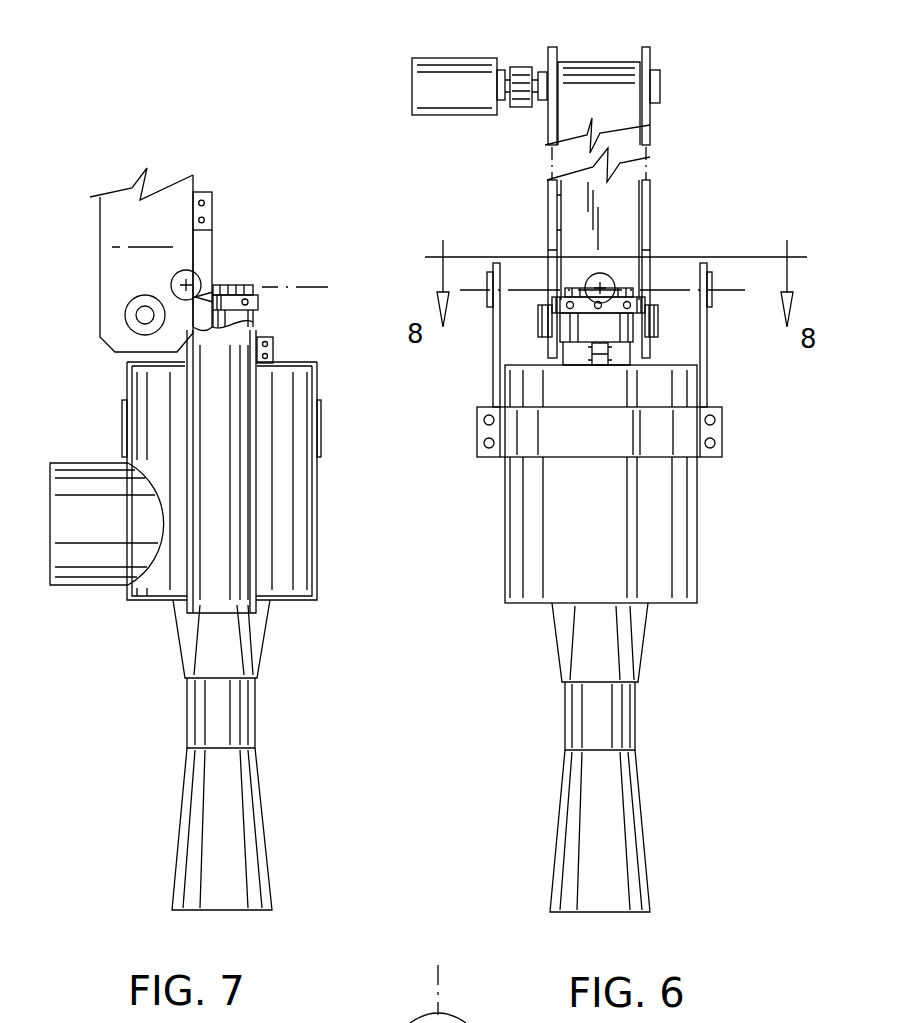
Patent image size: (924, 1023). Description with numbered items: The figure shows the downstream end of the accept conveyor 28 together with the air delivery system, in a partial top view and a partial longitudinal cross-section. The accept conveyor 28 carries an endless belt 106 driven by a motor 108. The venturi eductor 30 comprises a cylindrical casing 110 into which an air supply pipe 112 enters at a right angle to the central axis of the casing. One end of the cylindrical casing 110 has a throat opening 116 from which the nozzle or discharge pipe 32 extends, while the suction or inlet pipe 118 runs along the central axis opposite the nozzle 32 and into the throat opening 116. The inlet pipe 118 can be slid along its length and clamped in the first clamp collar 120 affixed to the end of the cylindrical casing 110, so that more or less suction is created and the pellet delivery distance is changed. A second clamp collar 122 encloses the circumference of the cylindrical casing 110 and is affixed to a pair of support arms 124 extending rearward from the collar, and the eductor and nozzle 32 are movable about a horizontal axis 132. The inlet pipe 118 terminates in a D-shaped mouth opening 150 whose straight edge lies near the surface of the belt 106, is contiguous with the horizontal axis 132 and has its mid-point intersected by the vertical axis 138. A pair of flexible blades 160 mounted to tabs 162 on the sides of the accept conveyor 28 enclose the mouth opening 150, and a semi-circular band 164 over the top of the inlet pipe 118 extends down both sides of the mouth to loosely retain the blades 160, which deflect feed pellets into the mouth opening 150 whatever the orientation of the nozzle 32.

In FIG. 7, the accept conveyor 28 is at (100, 278).
In FIG. 6, the accept conveyor 28 is at (650, 62).
In FIG. 6, the venturi eductor 30 is at (698, 568).
In FIG. 7, the nozzle or discharge pipe 32 is at (263, 828).
In FIG. 6, the nozzle or discharge pipe 32 is at (648, 812).
In FIG. 6, the endless belt 106 is at (597, 62).
In FIG. 6, the motor 108 is at (443, 60).
In FIG. 7, the cylindrical casing 110 is at (320, 508).
In FIG. 7, the air supply pipe 112 is at (88, 462).
In FIG. 7, the throat opening 116 is at (265, 595).
In FIG. 7, the inlet pipe 118 is at (258, 398).
In FIG. 6, the inlet pipe 118 is at (652, 300).
In FIG. 7, the first clamp collar 120 is at (273, 347).
In FIG. 6, the first clamp collar 120 is at (707, 338).
In FIG. 7, the second clamp collar 122 is at (321, 440).
In FIG. 6, the second clamp collar 122 is at (657, 462).
In FIG. 6, the support arms 124 is at (610, 346).
In FIG. 7, the horizontal axis 132 is at (173, 272).
In FIG. 6, the horizontal axis 132 is at (472, 280).
In FIG. 7, the vertical axis 138 is at (320, 287).
In FIG. 6, the vertical axis 138 is at (610, 273).
In FIG. 7, the D-shaped mouth opening 150 is at (237, 285).
In FIG. 6, the D-shaped mouth opening 150 is at (648, 304).
In FIG. 7, the flexible blades 160 is at (213, 245).
In FIG. 6, the flexible blades 160 is at (547, 250).
In FIG. 7, the tabs 162 is at (205, 190).
In FIG. 6, the tabs 162 is at (547, 207).
In FIG. 7, the semi-circular band 164 is at (258, 300).
In FIG. 6, the semi-circular band 164 is at (655, 312).